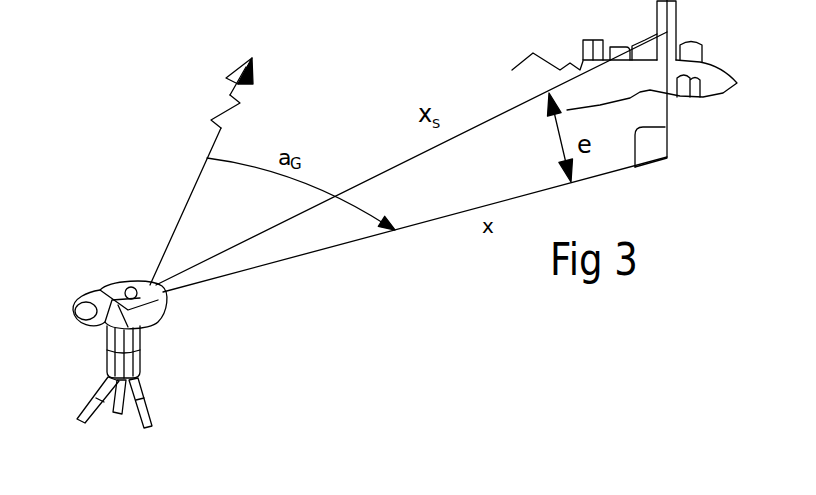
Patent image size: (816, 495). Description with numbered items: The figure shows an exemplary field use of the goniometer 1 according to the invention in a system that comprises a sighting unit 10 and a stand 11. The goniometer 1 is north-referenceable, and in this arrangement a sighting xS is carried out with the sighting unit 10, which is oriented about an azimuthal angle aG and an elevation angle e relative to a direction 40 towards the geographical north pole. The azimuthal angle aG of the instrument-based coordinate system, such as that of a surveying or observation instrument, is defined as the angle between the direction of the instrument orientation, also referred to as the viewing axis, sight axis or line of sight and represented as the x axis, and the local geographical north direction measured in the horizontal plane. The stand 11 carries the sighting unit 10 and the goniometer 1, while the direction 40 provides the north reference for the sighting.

The goniometer 1 is at (147, 348).
The sighting unit 10 is at (130, 272).
The stand 11 is at (122, 417).
The direction towards the geographical north pole 40 is at (247, 55).